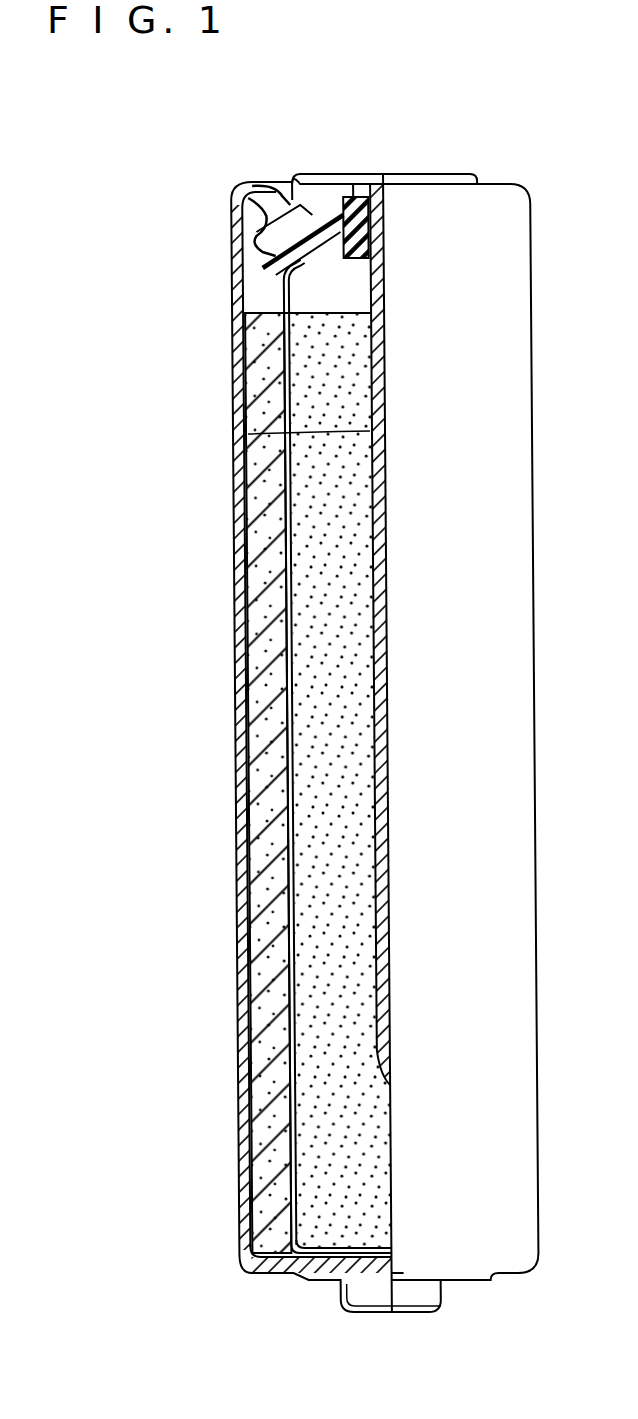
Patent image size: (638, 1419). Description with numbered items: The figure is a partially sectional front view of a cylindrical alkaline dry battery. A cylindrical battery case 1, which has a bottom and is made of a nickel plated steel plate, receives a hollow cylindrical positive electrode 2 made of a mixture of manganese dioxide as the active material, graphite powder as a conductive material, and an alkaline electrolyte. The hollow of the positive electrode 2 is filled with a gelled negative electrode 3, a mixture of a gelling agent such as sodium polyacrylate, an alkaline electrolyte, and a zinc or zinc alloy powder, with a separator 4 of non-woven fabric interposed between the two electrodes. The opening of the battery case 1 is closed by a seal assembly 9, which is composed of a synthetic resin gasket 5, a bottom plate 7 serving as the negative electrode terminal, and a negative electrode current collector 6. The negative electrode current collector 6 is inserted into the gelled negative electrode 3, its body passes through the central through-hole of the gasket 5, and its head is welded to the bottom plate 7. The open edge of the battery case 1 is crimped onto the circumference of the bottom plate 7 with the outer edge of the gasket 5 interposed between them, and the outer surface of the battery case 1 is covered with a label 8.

The battery case 1 is at (231, 770).
The positive electrode 2 is at (258, 1110).
The negative electrode 3 is at (328, 635).
The separator 4 is at (282, 868).
The gasket 5 is at (262, 262).
The negative electrode current collector 6 is at (246, 434).
The bottom plate 7 is at (330, 176).
The label 8 is at (229, 1193).
The seal assembly 9 is at (159, 148).